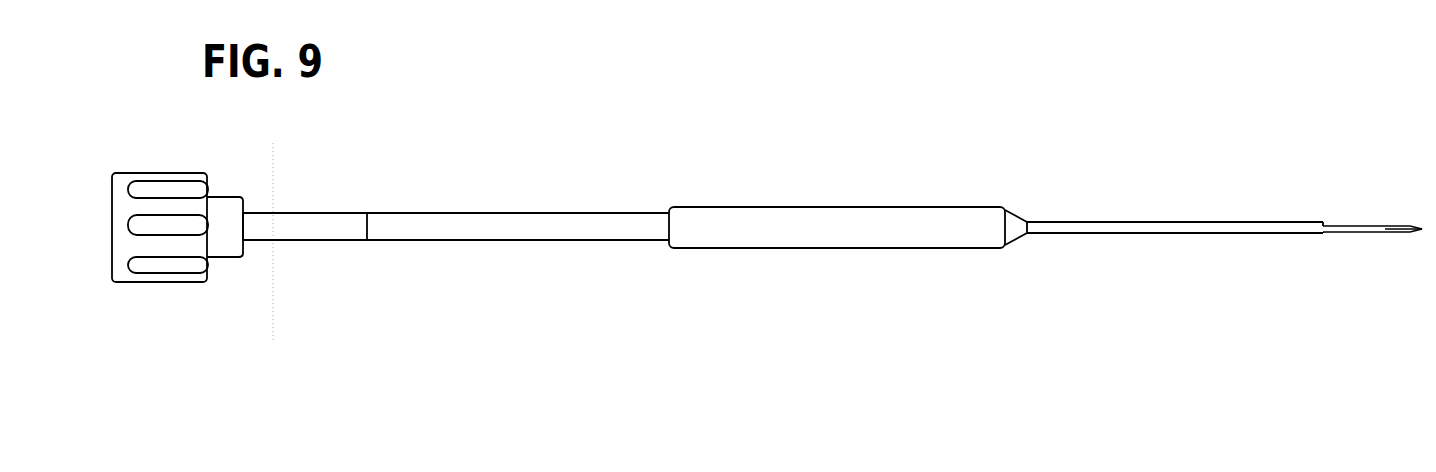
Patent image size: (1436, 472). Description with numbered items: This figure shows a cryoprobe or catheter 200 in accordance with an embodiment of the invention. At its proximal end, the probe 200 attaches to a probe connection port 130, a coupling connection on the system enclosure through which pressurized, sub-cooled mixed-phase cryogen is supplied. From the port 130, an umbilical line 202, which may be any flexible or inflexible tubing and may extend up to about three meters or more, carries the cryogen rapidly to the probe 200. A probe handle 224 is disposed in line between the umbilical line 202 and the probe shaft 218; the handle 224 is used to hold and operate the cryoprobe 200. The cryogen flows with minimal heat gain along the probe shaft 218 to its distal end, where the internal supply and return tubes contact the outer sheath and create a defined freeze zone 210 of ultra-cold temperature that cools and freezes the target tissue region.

The probe connection port 130 is at (181, 270).
The probe 200 is at (1052, 244).
The umbilical line 202 is at (497, 227).
The probe handle 224 is at (933, 225).
The probe shaft 218 is at (1115, 234).
The freeze zone 210 is at (1374, 261).